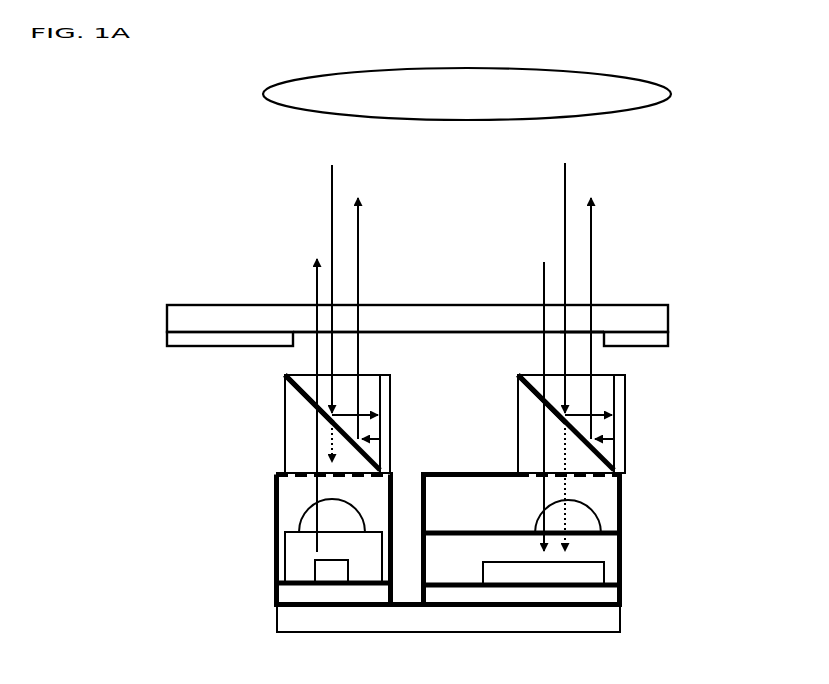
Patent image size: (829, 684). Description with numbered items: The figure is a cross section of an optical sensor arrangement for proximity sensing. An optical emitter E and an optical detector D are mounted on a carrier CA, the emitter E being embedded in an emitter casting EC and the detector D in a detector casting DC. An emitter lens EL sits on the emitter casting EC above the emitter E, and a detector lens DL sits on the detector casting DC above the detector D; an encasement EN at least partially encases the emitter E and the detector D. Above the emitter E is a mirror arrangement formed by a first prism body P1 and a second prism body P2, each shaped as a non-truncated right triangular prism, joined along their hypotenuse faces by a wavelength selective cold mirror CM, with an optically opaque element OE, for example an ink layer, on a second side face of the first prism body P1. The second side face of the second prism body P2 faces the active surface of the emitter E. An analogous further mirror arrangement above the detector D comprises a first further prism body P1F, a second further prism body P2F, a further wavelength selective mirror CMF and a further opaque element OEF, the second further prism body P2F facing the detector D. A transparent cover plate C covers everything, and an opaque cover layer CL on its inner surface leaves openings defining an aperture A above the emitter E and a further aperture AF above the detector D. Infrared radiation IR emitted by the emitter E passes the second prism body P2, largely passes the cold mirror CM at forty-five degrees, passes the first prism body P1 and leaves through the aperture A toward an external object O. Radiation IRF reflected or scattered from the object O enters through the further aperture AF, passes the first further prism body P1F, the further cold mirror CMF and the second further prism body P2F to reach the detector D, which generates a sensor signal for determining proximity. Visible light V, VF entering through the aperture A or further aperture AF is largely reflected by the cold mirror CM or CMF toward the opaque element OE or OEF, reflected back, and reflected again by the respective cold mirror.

The external object O is at (467, 94).
The cover plate C is at (417, 318).
The cover layer CL is at (673, 339).
The aperture A is at (370, 328).
The further aperture AF is at (603, 328).
The visible light V is at (356, 313).
The visible light VF is at (591, 353).
The emitted infrared radiation IR is at (306, 405).
The reflected or scattered infrared radiation IRF is at (529, 406).
The optically opaque element OE is at (349, 424).
The further optically opaque element OEF is at (586, 424).
The wavelength selective mirror CM is at (280, 374).
The further wavelength selective mirror CMF is at (515, 376).
The first prism body P1 is at (310, 381).
The first further prism body P1F is at (538, 385).
The second prism body P2 is at (298, 419).
The second further prism body P2F is at (528, 416).
The encasement EN is at (269, 499).
The carrier CA is at (437, 607).
The emitter casting EC is at (333, 557).
The optical emitter E is at (331, 571).
The emitter lens EL is at (332, 515).
The detector casting DC is at (521, 559).
The optical detector D is at (543, 573).
The detector lens DL is at (568, 516).